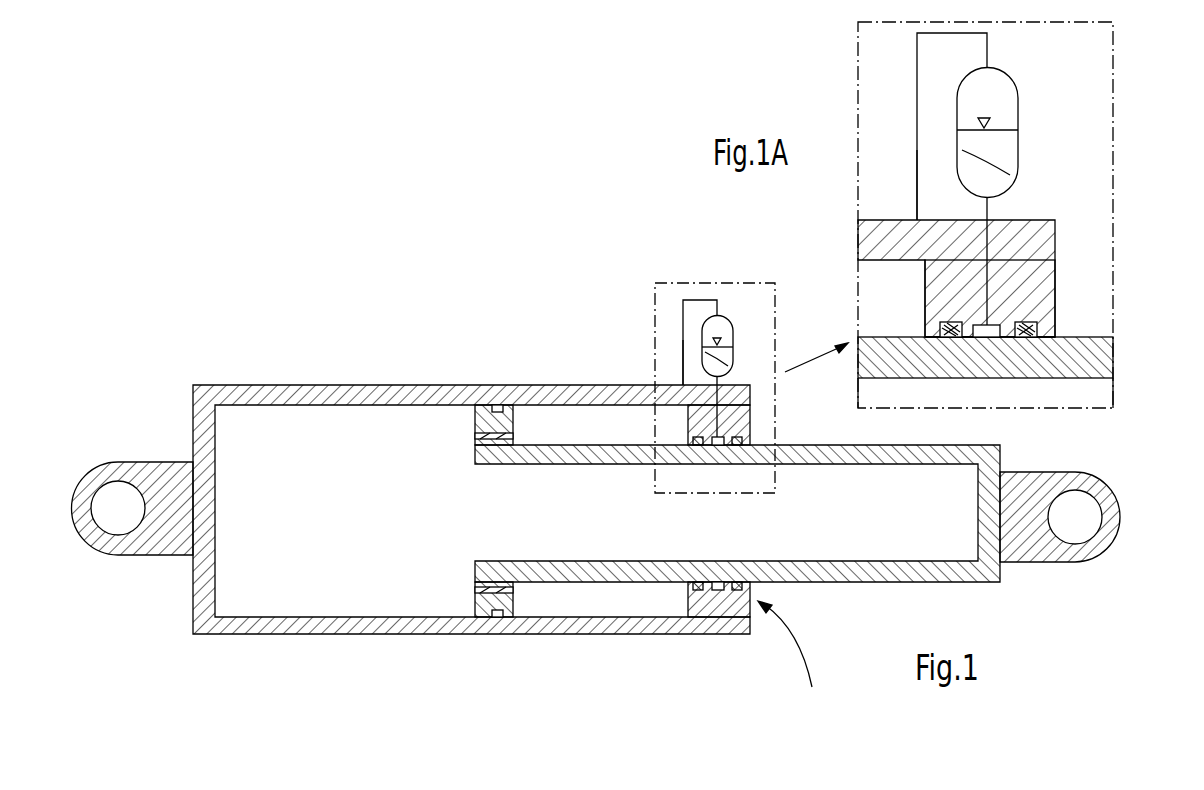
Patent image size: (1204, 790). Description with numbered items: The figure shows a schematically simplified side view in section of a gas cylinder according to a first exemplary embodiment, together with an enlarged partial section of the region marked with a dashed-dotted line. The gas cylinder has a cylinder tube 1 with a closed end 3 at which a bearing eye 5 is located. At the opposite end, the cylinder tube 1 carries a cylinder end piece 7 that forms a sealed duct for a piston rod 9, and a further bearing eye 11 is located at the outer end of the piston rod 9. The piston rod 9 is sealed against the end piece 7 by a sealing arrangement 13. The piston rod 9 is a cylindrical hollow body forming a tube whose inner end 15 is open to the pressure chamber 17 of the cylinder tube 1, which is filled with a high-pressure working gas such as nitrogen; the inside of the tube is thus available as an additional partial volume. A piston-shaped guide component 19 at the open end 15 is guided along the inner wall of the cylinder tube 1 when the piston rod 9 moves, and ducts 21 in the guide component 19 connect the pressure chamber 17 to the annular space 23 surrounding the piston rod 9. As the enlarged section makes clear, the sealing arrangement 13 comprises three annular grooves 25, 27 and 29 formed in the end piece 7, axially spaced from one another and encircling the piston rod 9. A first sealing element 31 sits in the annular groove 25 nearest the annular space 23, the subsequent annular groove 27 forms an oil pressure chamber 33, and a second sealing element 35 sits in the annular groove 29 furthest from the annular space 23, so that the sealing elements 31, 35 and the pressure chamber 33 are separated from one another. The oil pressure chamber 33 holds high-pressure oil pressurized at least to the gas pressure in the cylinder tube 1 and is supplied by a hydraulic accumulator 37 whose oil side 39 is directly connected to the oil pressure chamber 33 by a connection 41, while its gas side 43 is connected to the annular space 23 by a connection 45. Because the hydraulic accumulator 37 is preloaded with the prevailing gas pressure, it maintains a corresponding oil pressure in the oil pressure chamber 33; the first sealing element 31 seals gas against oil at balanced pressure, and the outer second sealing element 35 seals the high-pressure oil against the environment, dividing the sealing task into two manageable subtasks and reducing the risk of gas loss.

In FIG. 1, the cylinder tube 1 is at (596, 466).
In FIG. 1A, the cylinder tube 1 is at (878, 238).
In FIG. 1, the closed end 3 is at (192, 396).
In FIG. 1, the bearing eye 5 is at (122, 490).
In FIG. 1, the cylinder end piece 7 is at (740, 543).
In FIG. 1A, the cylinder end piece 7 is at (1035, 262).
In FIG. 1, the piston rod 9 is at (848, 575).
In FIG. 1A, the piston rod 9 is at (1085, 360).
In FIG. 1, the bearing eye 11 is at (1077, 535).
In FIG. 1, the sealing arrangement 13 is at (794, 653).
In FIG. 1, the inner end 15 is at (467, 500).
In FIG. 1, the pressure chamber 17 is at (331, 440).
In FIG. 1, the guide component 19 is at (503, 600).
In FIG. 1, the ducts 21 is at (497, 436).
In FIG. 1, the annular space 23 is at (578, 430).
In FIG. 1A, the annular space 23 is at (858, 292).
In FIG. 1A, the annular groove 25 is at (940, 338).
In FIG. 1A, the annular groove 27 is at (970, 338).
In FIG. 1A, the annular groove 29 is at (1042, 340).
In FIG. 1, the first sealing element 31 is at (700, 447).
In FIG. 1A, the first sealing element 31 is at (948, 324).
In FIG. 1, the oil pressure chamber 33 is at (718, 447).
In FIG. 1A, the oil pressure chamber 33 is at (985, 338).
In FIG. 1, the second sealing element 35 is at (737, 447).
In FIG. 1A, the second sealing element 35 is at (1020, 338).
In FIG. 1, the hydraulic accumulator 37 is at (733, 335).
In FIG. 1A, the hydraulic accumulator 37 is at (1020, 98).
In FIG. 1, the oil side 39 is at (722, 364).
In FIG. 1A, the oil side 39 is at (1005, 163).
In FIG. 1, the connection 41 is at (718, 414).
In FIG. 1A, the connection 41 is at (1012, 221).
In FIG. 1, the gas side 43 is at (703, 330).
In FIG. 1A, the gas side 43 is at (962, 107).
In FIG. 1, the connection 45 is at (683, 355).
In FIG. 1A, the connection 45 is at (917, 157).